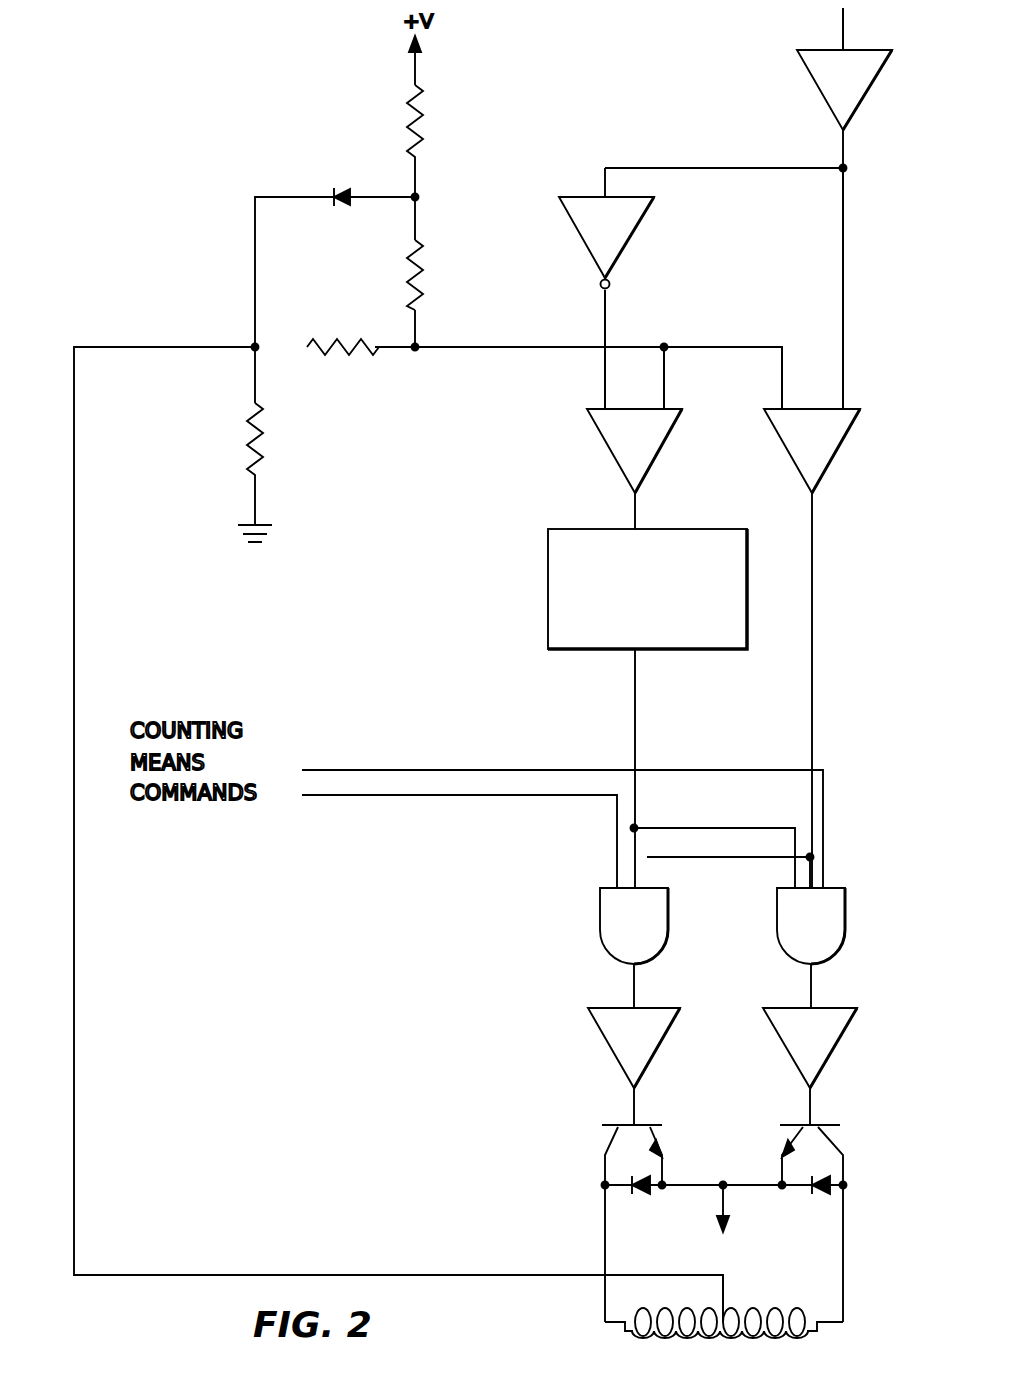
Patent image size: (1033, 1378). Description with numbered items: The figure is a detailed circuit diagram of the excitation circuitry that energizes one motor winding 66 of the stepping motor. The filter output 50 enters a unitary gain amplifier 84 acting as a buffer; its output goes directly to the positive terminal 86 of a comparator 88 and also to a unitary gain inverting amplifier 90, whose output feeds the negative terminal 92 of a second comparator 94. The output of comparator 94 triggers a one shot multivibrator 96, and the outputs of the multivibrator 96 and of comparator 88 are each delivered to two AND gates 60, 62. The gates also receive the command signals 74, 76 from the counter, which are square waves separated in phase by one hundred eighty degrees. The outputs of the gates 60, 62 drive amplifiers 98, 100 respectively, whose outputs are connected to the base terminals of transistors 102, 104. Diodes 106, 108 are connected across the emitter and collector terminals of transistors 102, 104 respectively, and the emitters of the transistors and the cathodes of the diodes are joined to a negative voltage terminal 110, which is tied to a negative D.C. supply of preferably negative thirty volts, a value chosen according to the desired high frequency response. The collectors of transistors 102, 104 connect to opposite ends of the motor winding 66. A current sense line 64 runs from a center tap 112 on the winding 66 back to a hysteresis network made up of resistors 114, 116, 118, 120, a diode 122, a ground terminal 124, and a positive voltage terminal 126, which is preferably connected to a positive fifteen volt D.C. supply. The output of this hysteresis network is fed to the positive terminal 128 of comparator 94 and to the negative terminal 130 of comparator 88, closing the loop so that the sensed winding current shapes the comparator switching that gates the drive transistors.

The filter output 50 is at (852, 43).
The AND gate 60 is at (668, 920).
The AND gate 62 is at (845, 940).
The current sense line 64 is at (74, 1055).
The motor winding 66 is at (808, 1337).
The command signal 74 is at (541, 795).
The command signal 76 is at (538, 743).
The unitary gain amplifier 84 is at (866, 92).
The positive terminal 86 is at (843, 395).
The comparator 88 is at (838, 450).
The unitary gain inverting amplifier 90 is at (630, 243).
The negative terminal 92 is at (604, 382).
The comparator 94 is at (657, 450).
The one shot multivibrator 96 is at (747, 592).
The amplifier 98 is at (660, 1045).
The amplifier 100 is at (833, 1045).
The transistor 102 is at (640, 1122).
The transistor 104 is at (818, 1122).
The diode 106 is at (627, 1195).
The diode 108 is at (815, 1198).
The negative voltage terminal 110 is at (727, 1222).
The center tap 112 is at (728, 1302).
The resistor 114 is at (258, 437).
The resistor 116 is at (345, 352).
The resistor 118 is at (422, 266).
The resistor 120 is at (422, 118).
The diode 122 is at (333, 207).
The ground terminal 124 is at (270, 524).
The positive voltage terminal 126 is at (420, 49).
The positive terminal 128 is at (664, 372).
The negative terminal 130 is at (782, 392).